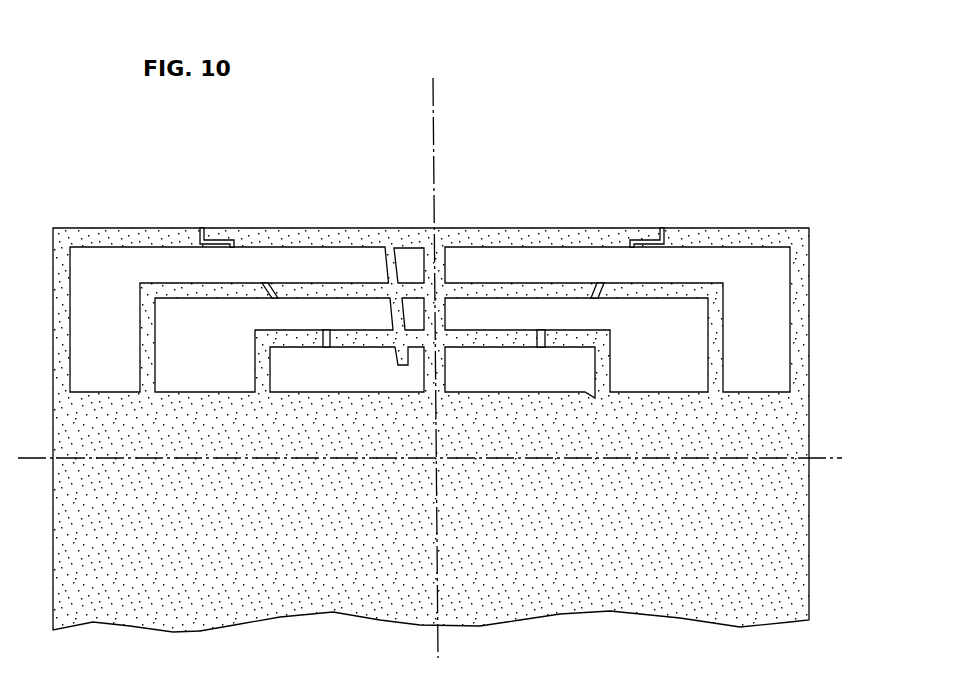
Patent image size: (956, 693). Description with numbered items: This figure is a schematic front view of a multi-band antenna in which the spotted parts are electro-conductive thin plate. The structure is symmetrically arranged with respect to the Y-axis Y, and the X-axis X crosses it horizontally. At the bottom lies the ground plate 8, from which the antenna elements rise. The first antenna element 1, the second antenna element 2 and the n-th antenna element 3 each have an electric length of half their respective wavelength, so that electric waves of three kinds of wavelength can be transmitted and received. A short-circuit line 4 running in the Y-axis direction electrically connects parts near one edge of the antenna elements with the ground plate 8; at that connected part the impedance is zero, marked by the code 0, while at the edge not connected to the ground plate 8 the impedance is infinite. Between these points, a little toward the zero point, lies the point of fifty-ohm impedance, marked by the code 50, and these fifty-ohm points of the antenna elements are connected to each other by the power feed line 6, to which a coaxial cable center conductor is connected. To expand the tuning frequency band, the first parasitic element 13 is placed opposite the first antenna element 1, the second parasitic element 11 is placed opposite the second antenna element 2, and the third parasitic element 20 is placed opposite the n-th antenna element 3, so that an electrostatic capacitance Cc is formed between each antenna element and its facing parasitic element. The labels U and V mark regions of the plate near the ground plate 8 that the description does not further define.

The ground plate 8 is at (809, 540).
The first parasitic element 13 is at (157, 228).
The second parasitic element 11 is at (173, 282).
The third parasitic element 20 is at (268, 330).
The power feed line 6 is at (385, 270).
The point of impedance being 50 Ω 50 is at (386, 228).
The short-circuit line 4 is at (418, 264).
The point of impedance being zero 0 is at (434, 228).
The n-th antenna element 3 is at (513, 330).
The second antenna element 2 is at (535, 283).
The first antenna element 1 is at (562, 228).
The electrostatic capacitance Cc is at (232, 247).
The corner U is at (790, 389).
The corner V is at (585, 392).
The X-axis X is at (430, 458).
The Y-axis Y is at (435, 368).